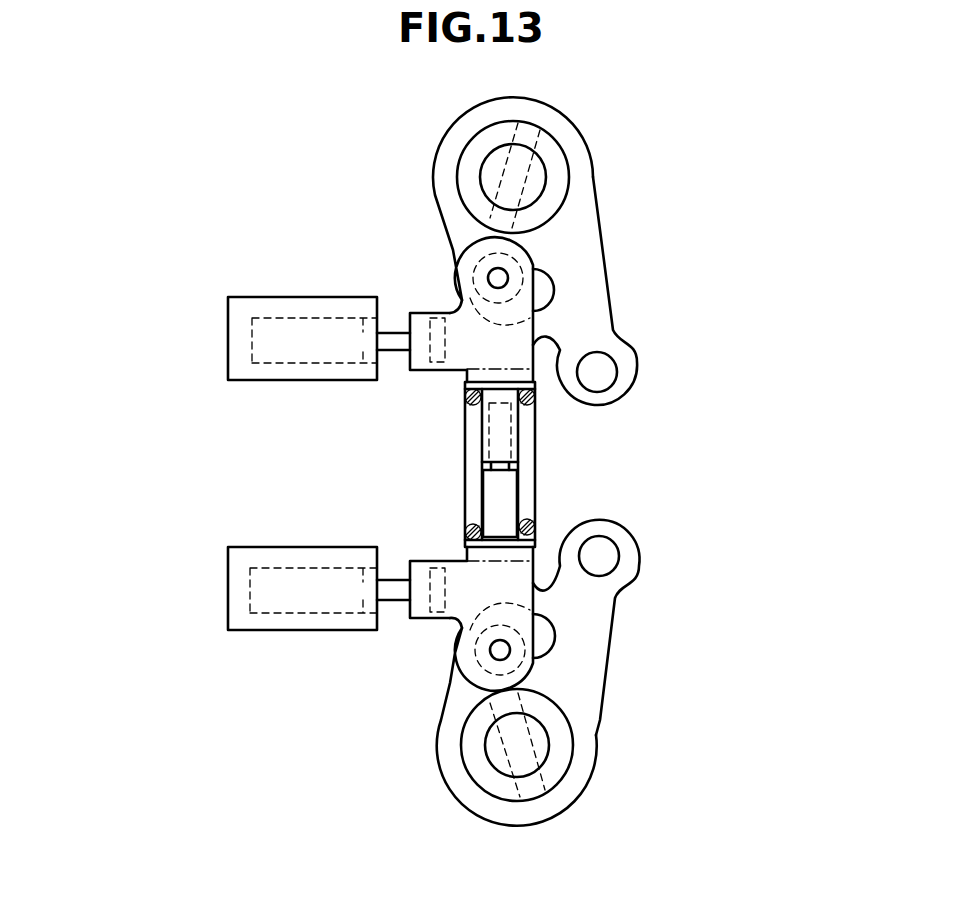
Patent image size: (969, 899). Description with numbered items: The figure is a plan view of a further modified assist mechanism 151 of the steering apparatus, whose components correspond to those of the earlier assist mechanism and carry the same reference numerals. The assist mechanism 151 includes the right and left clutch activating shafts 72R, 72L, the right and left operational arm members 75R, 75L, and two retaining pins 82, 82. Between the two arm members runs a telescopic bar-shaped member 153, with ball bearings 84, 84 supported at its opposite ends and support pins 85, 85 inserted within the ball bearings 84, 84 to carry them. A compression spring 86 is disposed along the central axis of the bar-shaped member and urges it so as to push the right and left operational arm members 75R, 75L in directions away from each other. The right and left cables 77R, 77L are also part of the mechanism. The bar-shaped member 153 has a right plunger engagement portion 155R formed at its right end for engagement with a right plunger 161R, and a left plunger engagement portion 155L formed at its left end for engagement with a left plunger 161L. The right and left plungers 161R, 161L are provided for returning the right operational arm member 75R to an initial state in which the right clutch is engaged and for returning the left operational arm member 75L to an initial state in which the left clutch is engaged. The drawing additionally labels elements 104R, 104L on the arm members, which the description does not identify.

The assist mechanism 151 is at (197, 137).
The right operational arm member 75R is at (443, 123).
The left operational arm member 75L is at (433, 793).
The right clutch activating shaft 72R is at (478, 170).
The left clutch activating shaft 72L is at (482, 755).
The retaining pin 82 is at (490, 212).
The support pin 85 is at (500, 280).
The ball bearing 84 is at (533, 266).
The right stopper projection 104R is at (552, 290).
The left stopper projection 104L is at (555, 633).
The right cable 77R is at (597, 372).
The left cable 77L is at (599, 556).
The compression spring 86 is at (537, 458).
The telescopic bar-shaped member 153 is at (500, 497).
The right plunger engagement portion 155R is at (413, 312).
The left plunger engagement portion 155L is at (413, 620).
The right plunger 161R is at (228, 340).
The left plunger 161L is at (228, 590).